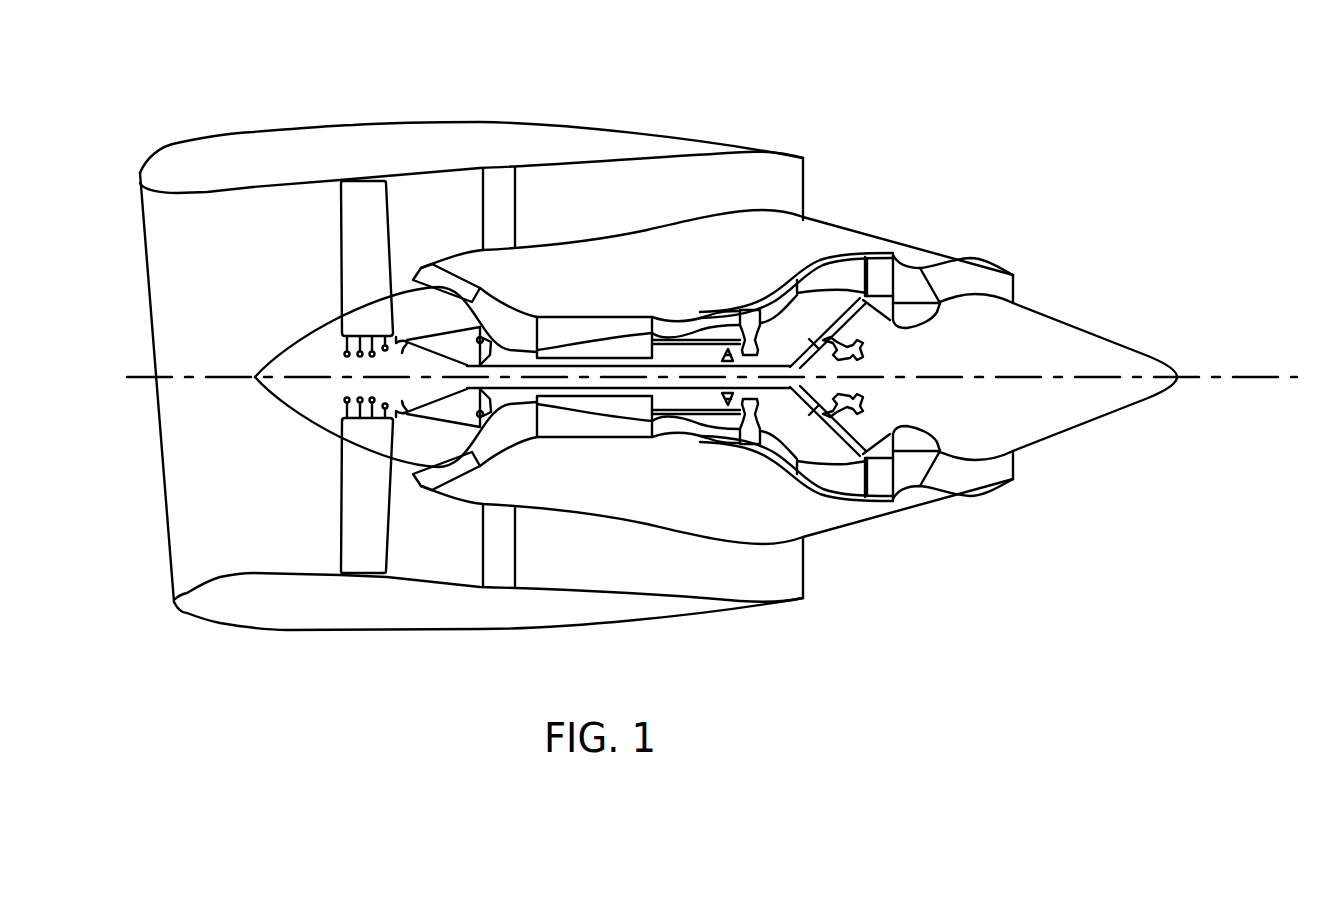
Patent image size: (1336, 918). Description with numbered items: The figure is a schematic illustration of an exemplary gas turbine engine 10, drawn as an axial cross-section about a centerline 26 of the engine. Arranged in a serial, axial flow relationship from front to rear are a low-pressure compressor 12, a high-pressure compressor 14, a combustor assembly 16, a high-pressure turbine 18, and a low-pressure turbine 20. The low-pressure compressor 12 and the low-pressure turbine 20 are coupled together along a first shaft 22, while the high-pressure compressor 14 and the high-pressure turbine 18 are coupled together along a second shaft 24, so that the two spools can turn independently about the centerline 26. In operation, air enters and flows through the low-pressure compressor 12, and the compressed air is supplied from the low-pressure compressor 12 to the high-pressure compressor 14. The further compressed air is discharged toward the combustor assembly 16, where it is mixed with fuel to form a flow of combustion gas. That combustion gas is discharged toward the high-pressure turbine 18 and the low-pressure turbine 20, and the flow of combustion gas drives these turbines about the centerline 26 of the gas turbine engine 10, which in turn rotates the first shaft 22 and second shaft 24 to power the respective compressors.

The gas turbine engine 10 is at (945, 111).
The low-pressure compressor 12 is at (427, 280).
The high-pressure compressor 14 is at (561, 330).
The combustor assembly 16 is at (706, 320).
The high-pressure turbine 18 is at (749, 439).
The low-pressure turbine 20 is at (835, 272).
The first shaft 22 is at (527, 440).
The second shaft 24 is at (745, 357).
The centerline 26 is at (1248, 377).